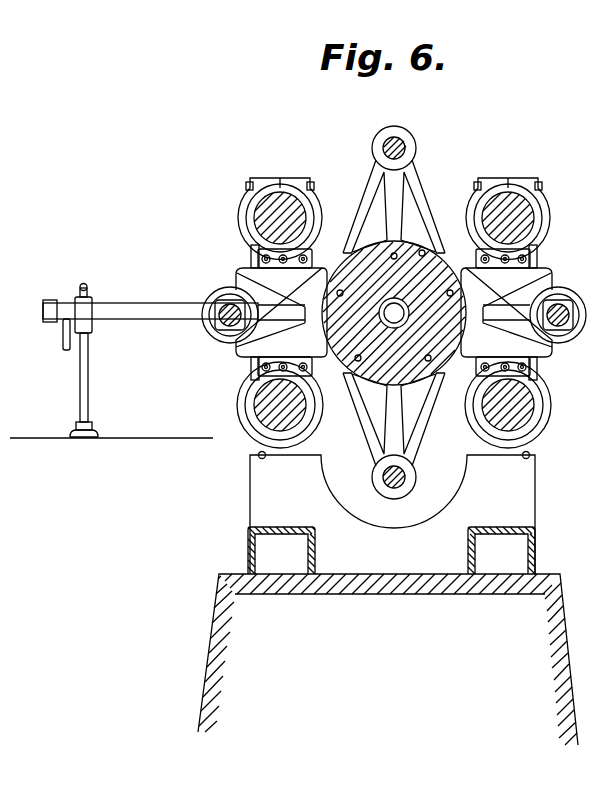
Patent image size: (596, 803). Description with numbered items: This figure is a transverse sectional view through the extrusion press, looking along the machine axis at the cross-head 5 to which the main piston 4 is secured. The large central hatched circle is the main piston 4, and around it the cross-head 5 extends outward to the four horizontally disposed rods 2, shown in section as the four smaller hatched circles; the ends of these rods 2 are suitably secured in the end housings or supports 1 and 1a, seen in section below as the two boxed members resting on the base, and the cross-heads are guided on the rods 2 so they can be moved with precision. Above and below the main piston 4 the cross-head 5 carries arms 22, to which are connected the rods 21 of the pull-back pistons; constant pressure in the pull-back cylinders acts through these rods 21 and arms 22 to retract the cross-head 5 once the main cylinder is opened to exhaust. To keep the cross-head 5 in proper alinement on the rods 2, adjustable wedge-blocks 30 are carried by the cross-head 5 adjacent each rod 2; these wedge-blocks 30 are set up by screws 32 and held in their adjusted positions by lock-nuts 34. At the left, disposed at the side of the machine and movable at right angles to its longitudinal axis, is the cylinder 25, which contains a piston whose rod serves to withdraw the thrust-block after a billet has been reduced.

The end housing 1 is at (248, 532).
The end housing 1a is at (538, 536).
The horizontally disposed rods 2 is at (268, 210).
The main piston 4 is at (421, 257).
The cross-head 5 is at (545, 346).
The rods 21 is at (404, 146).
The arms 22 is at (383, 138).
The cylinder 25 is at (135, 313).
The adjustable wedge-blocks 30 is at (305, 238).
The screws 32 is at (252, 255).
The lock-nuts 34 is at (270, 262).